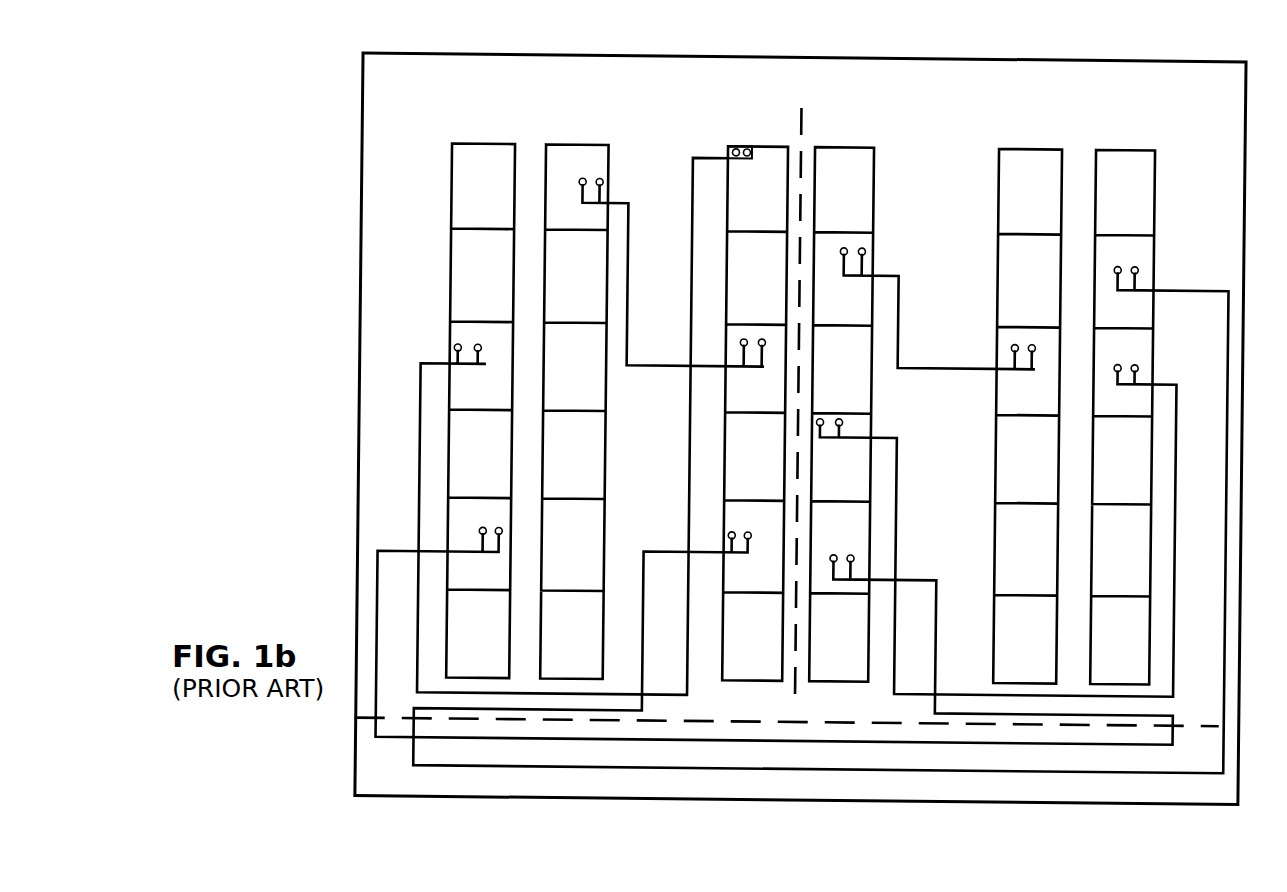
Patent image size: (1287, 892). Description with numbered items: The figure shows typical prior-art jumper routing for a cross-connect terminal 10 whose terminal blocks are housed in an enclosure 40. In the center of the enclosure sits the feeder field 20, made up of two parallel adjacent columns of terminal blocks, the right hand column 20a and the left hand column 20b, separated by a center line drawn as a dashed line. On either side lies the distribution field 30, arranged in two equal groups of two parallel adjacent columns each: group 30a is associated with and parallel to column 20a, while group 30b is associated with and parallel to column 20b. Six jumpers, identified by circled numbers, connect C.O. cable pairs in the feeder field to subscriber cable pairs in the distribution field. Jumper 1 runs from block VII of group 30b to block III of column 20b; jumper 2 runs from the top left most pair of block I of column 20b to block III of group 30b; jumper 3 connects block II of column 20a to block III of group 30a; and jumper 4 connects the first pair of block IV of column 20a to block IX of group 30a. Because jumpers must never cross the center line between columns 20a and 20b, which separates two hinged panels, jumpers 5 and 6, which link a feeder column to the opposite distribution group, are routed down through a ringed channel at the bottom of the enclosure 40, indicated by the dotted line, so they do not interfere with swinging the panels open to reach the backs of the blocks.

The cross-connect terminal 10 is at (269, 72).
The feeder field 20 is at (808, 389).
The right hand column of feeder field 20a is at (841, 139).
The left hand column of feeder field 20b is at (764, 143).
The distribution field 30 is at (818, 377).
The distribution field group 30a is at (1134, 140).
The distribution field group 30b is at (589, 132).
The enclosure 40 is at (747, 458).
The jumper 1 is at (672, 272).
The jumper 2 is at (584, 419).
The jumper 3 is at (937, 308).
The jumper 4 is at (994, 536).
The jumper 5 is at (821, 517).
The jumper 6 is at (775, 635).